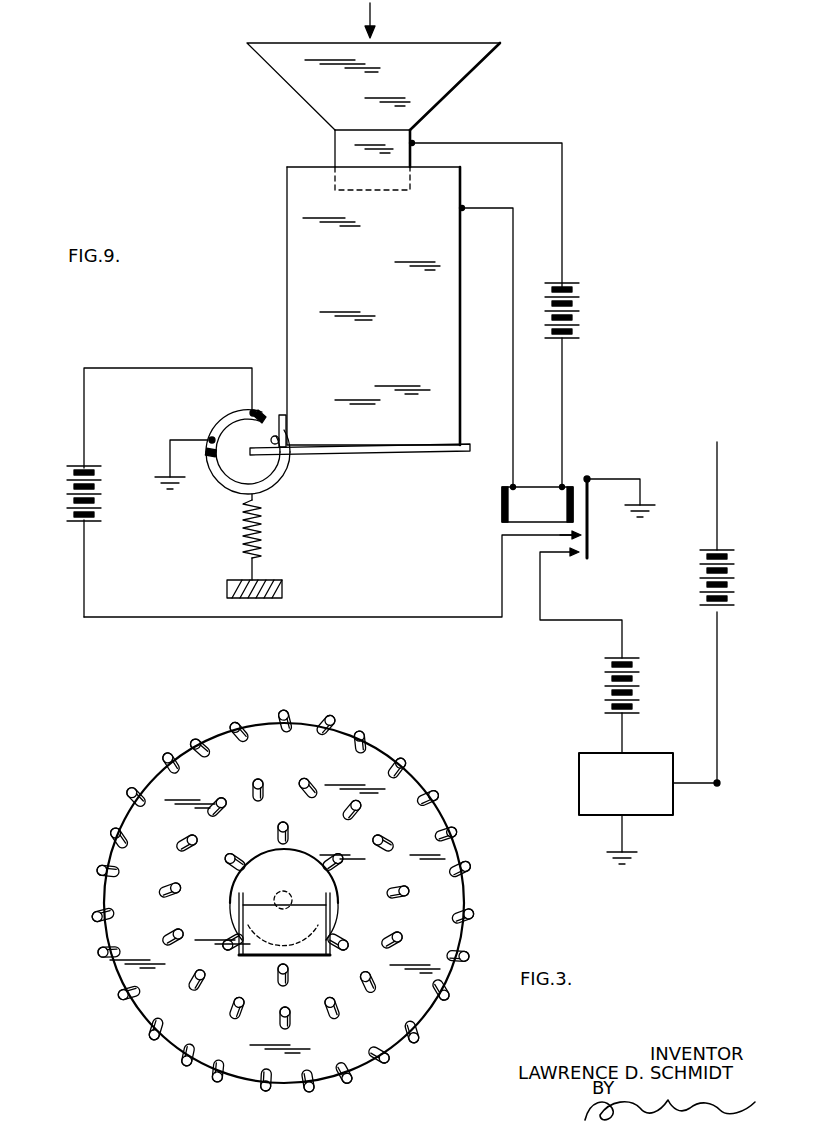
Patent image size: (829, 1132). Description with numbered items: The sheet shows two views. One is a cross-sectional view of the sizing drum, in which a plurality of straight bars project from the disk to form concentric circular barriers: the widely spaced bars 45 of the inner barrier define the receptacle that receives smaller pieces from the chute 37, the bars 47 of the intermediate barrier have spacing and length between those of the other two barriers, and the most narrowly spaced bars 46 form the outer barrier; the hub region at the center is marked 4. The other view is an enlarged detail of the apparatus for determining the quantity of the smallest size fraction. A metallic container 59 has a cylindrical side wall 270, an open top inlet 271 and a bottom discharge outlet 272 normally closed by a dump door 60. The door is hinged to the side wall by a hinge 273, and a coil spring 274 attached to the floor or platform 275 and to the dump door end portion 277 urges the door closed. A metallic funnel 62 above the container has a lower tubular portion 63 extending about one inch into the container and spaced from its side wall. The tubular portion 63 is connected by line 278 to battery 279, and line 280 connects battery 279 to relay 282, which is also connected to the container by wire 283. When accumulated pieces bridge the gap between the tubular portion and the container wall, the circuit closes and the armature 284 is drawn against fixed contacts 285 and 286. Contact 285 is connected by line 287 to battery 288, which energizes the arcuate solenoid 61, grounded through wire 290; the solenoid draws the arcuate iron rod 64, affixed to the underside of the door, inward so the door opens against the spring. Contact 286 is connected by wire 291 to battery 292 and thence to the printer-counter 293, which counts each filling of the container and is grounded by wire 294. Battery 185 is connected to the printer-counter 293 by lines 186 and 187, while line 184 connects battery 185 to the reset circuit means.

In FIG. 3, the hub 4 is at (266, 863).
In FIG. 3, the chute 37 is at (303, 910).
In FIG. 3, the bars of the inner barrier 45 is at (343, 873).
In FIG. 3, the bars of the outer barrier 46 is at (164, 752).
In FIG. 3, the bars of the intermediate barrier 47 is at (308, 784).
In FIG. 9, the metallic container 59 is at (341, 306).
In FIG. 9, the dump door 60 is at (390, 453).
In FIG. 9, the solenoid 61 is at (236, 417).
In FIG. 9, the metallic funnel 62 is at (304, 88).
In FIG. 9, the lower tubular portion 63 is at (386, 192).
In FIG. 9, the magnetizable metallic rod 64 is at (280, 478).
In FIG. 9, the line 184 is at (717, 467).
In FIG. 9, the battery 185 is at (700, 584).
In FIG. 9, the line 186 is at (717, 683).
In FIG. 9, the line 187 is at (698, 787).
In FIG. 9, the cylindrical side wall 270 is at (287, 302).
In FIG. 9, the open top inlet 271 is at (303, 167).
In FIG. 9, the bottom discharge outlet 272 is at (360, 469).
In FIG. 9, the hinge 273 is at (280, 434).
In FIG. 9, the coil spring 274 is at (243, 530).
In FIG. 9, the floor or platform 275 is at (283, 590).
In FIG. 9, the dump door end portion 277 is at (232, 432).
In FIG. 9, the line 278 is at (562, 203).
In FIG. 9, the battery 279 is at (572, 318).
In FIG. 9, the line 280 is at (562, 407).
In FIG. 9, the relay 282 is at (513, 512).
In FIG. 9, the wire 283 is at (513, 280).
In FIG. 9, the armature 284 is at (590, 535).
In FIG. 9, the fixed contact 285 is at (570, 544).
In FIG. 9, the fixed contact 286 is at (575, 562).
In FIG. 9, the line 287 is at (410, 617).
In FIG. 9, the battery 288 is at (68, 490).
In FIG. 9, the wire 290 is at (170, 455).
In FIG. 9, the wire 291 is at (574, 626).
In FIG. 9, the battery 292 is at (606, 692).
In FIG. 9, the printer-counter 293 is at (579, 783).
In FIG. 9, the wire 294 is at (618, 840).